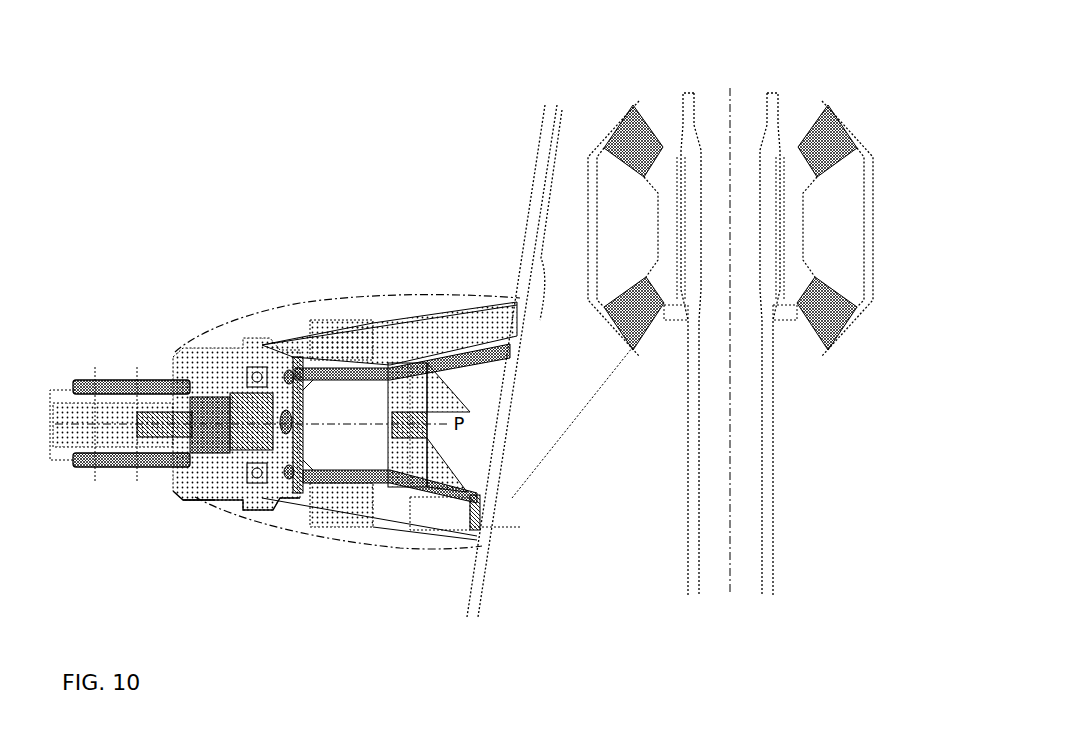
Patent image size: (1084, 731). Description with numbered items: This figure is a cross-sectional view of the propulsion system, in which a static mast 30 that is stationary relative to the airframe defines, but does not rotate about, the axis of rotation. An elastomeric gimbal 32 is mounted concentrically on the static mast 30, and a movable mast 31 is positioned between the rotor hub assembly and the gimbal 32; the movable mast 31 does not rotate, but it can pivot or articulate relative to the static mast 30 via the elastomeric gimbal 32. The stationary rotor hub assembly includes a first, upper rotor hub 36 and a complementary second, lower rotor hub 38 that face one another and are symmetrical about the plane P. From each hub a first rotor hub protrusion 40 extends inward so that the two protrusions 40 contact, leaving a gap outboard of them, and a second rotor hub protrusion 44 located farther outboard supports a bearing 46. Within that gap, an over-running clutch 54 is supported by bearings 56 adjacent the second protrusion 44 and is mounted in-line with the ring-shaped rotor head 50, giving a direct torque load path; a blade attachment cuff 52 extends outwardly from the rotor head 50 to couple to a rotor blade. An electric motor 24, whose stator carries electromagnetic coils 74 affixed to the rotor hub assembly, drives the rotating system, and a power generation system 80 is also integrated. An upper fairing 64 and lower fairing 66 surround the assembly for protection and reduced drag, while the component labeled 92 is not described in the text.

The electric motor 24 is at (347, 551).
The static mast 30 is at (713, 503).
The movable mast 31 is at (552, 140).
The elastomeric gimbal 32 is at (647, 104).
The first rotor hub 36 is at (445, 335).
The second rotor hub 38 is at (443, 512).
The first rotor hub protrusion 40 is at (430, 395).
The second rotor hub protrusion 44 is at (275, 372).
The bearing 46 is at (250, 367).
The rotor head 50 is at (199, 496).
The blade attachment cuff 52 is at (130, 465).
The over-running clutch 54 is at (292, 455).
The bearings 56 is at (289, 384).
The upper fairing 64 is at (418, 300).
The lower fairing 66 is at (410, 548).
The electromagnetic coils 74 is at (326, 325).
The power generation system 80 is at (190, 512).
The rotor hub 92 is at (205, 410).